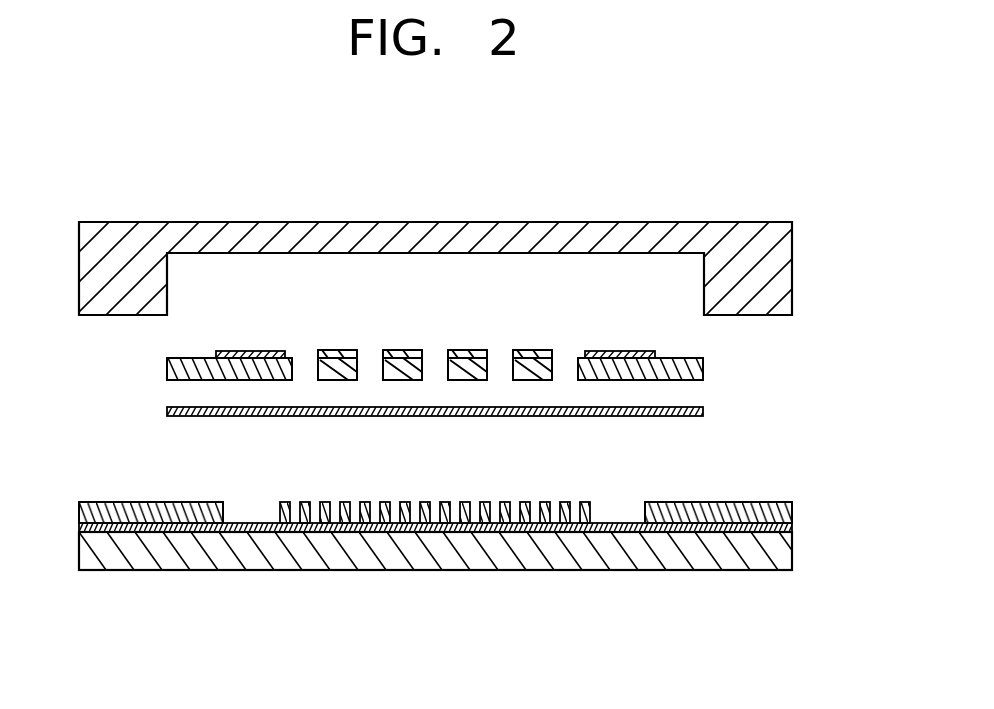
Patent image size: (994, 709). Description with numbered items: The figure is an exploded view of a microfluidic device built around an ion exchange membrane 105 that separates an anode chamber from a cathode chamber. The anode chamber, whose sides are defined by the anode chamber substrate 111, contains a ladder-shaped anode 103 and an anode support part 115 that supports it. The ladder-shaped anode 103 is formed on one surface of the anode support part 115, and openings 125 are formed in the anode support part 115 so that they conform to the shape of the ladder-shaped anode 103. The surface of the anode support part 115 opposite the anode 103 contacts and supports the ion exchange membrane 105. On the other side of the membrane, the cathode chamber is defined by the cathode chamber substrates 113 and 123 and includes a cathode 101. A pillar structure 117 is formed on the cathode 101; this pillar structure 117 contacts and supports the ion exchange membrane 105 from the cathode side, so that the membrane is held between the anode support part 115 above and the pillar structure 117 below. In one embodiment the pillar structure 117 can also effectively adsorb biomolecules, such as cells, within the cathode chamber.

The cathode 101 is at (792, 528).
The ladder-shaped anode 103 is at (270, 350).
The ion exchange membrane 105 is at (703, 412).
The anode chamber substrate 111 is at (755, 228).
The cathode chamber substrate 113 is at (742, 560).
The anode support part 115 is at (192, 357).
The pillar structure 117 is at (280, 517).
The cathode chamber substrate 123 is at (92, 502).
The openings 125 is at (497, 367).